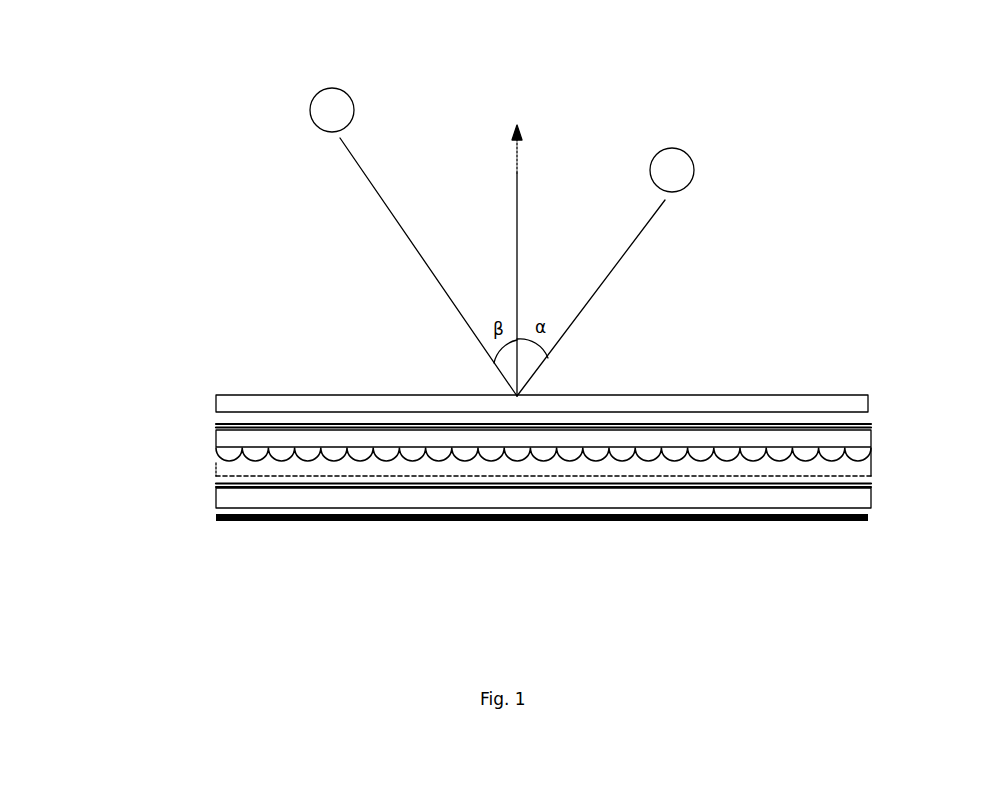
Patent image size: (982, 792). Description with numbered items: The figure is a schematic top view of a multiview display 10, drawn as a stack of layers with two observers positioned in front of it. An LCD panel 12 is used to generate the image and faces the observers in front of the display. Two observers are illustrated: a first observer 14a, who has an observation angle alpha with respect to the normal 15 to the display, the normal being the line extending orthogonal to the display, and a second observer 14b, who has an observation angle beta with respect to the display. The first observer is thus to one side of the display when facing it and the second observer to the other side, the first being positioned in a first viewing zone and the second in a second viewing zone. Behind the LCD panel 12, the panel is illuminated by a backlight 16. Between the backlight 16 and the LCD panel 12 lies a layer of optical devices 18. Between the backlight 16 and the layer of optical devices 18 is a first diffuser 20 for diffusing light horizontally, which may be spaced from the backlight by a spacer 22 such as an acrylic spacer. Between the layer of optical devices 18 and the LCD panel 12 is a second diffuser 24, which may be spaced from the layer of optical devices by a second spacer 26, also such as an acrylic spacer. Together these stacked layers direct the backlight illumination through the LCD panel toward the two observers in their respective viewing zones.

The multiview display 10 is at (290, 350).
The LCD panel 12 is at (217, 400).
The first observer 14a is at (695, 167).
The second observer 14b is at (348, 95).
The normal 15 is at (517, 173).
The backlight 16 is at (217, 518).
The layer of optical devices 18 is at (217, 463).
The first diffuser 20 is at (216, 481).
The spacer 22 is at (217, 498).
The second diffuser 24 is at (217, 426).
The second spacer 26 is at (217, 437).